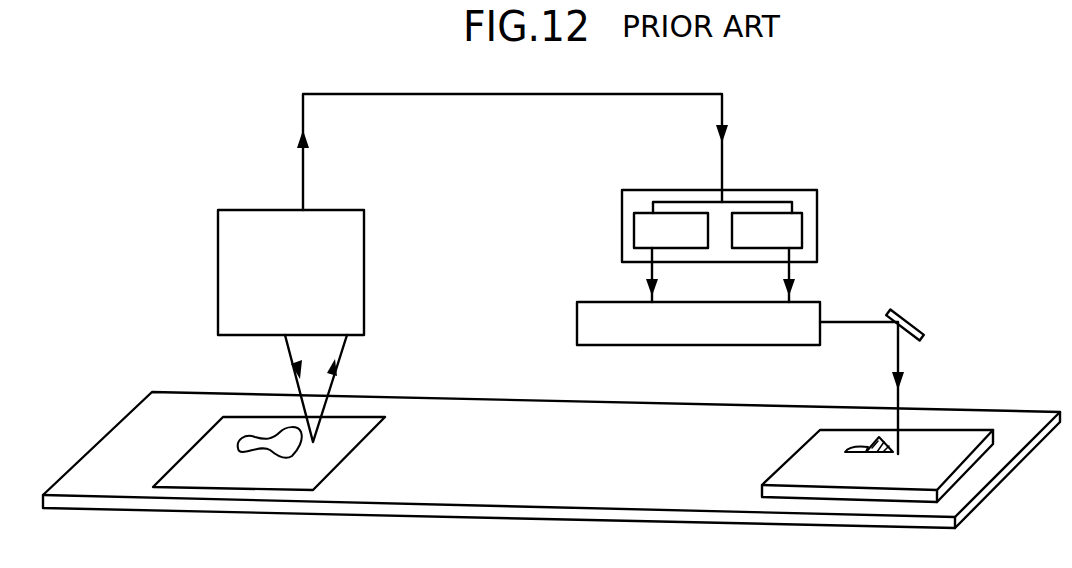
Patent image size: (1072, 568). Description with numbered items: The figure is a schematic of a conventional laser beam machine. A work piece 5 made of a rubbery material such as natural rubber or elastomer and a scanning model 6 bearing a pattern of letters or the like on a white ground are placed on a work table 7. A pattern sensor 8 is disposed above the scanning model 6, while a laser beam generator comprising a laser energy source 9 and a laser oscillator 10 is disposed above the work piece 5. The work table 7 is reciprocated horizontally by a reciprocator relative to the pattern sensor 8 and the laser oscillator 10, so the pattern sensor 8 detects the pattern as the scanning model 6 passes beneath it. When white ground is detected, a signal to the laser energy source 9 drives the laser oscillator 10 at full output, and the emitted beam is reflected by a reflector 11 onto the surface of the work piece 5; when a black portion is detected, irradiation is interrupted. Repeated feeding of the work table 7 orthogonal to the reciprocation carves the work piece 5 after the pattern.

The work piece 5 is at (787, 468).
The scanning model 6 is at (312, 477).
The work table 7 is at (568, 488).
The pattern sensor 8 is at (355, 282).
The laser energy source 9 is at (630, 200).
The laser oscillator 10 is at (580, 302).
The reflector 11 is at (913, 318).